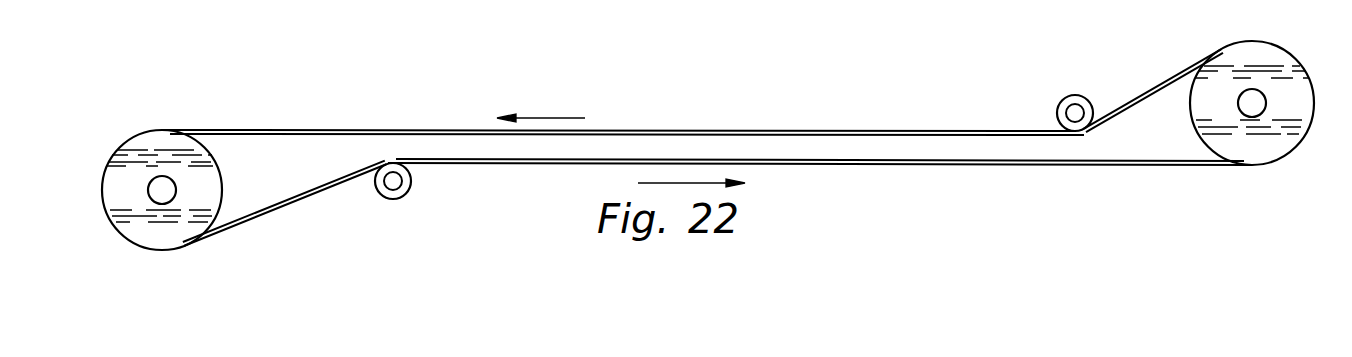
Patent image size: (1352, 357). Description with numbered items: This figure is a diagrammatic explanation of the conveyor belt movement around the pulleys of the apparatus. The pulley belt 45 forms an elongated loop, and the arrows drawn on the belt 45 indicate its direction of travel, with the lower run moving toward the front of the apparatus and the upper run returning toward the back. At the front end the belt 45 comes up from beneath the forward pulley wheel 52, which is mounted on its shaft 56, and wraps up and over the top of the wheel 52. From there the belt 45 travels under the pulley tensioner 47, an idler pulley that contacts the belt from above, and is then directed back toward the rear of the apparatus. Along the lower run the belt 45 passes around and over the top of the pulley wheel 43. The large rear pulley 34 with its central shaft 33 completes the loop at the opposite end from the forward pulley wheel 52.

The shaft of left roller 33 is at (157, 192).
The left roller 34 is at (121, 151).
The pulley wheel 43 is at (395, 199).
The pulley belt 45 is at (774, 128).
The pulley tensioner 47 is at (1073, 95).
The forward pulley wheel 52 is at (1246, 68).
The shaft 56 is at (1248, 99).